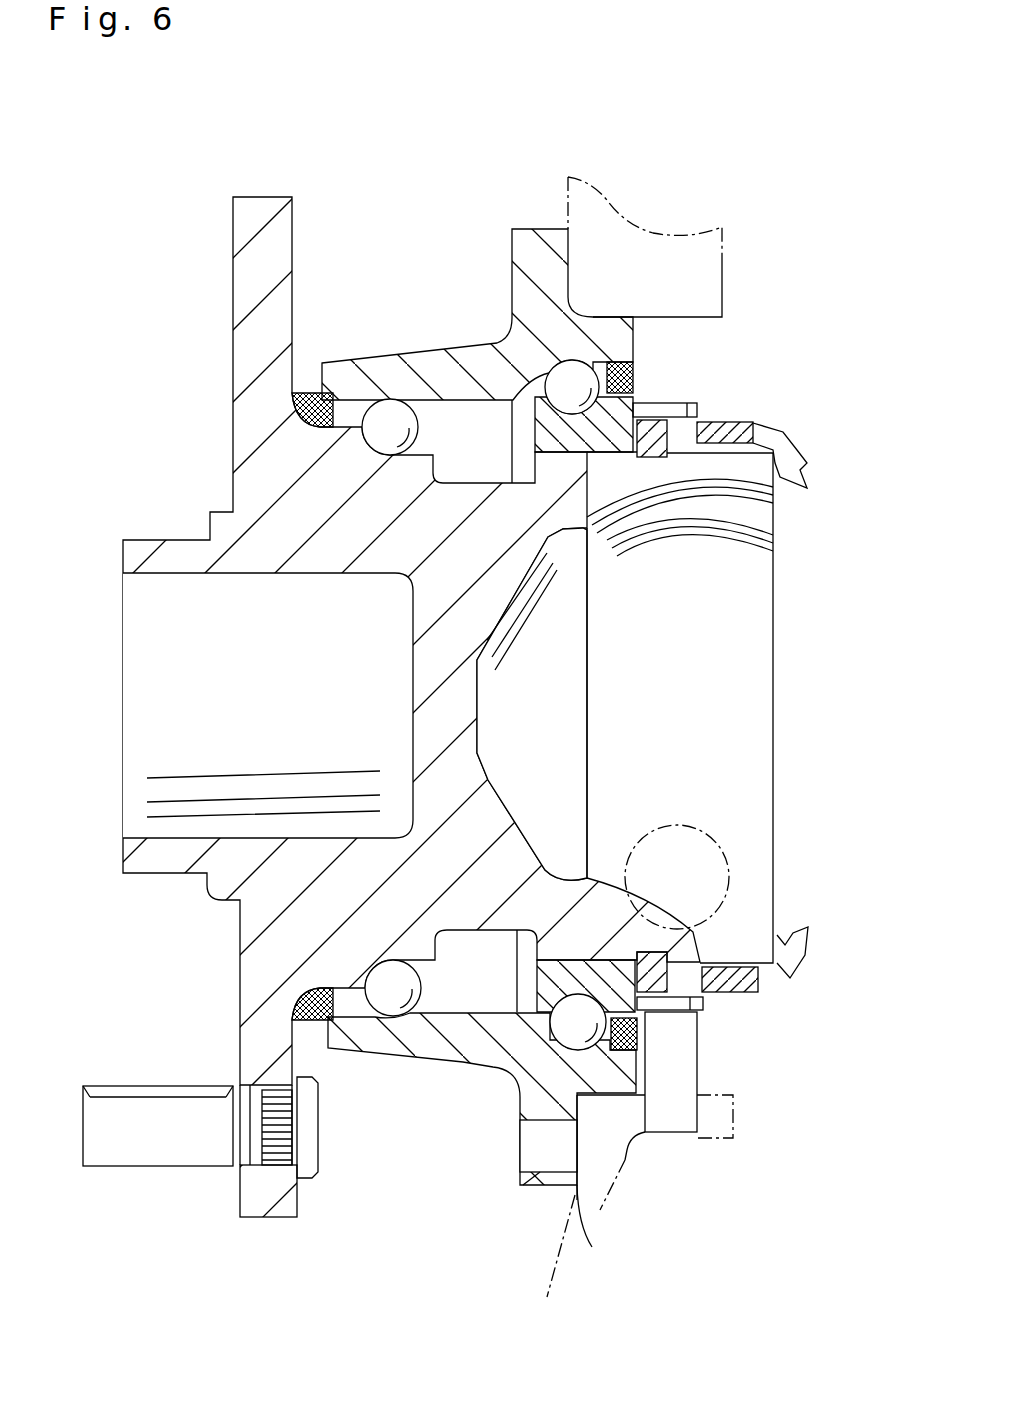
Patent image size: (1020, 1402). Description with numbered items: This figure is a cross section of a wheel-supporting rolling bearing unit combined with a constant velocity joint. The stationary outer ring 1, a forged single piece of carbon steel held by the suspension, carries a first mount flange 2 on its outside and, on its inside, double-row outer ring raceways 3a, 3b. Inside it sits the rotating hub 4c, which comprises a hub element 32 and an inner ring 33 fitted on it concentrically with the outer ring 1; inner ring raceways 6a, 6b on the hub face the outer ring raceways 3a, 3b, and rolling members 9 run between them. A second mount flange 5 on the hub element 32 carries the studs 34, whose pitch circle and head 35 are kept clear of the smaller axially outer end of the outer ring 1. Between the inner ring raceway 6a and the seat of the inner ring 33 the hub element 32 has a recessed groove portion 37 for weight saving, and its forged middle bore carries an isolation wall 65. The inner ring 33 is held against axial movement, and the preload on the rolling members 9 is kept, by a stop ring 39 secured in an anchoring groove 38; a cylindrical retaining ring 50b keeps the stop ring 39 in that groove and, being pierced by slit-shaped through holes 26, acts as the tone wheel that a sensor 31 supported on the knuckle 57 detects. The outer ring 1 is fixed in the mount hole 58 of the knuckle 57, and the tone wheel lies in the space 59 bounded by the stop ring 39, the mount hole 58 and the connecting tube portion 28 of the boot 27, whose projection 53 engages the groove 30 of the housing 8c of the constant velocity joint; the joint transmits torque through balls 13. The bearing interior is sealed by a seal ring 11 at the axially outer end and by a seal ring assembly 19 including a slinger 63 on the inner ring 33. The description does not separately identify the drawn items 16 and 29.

The outer ring 1 is at (507, 342).
The first mount flange 2 is at (542, 1182).
The outer ring raceway 3a is at (390, 1017).
The outer ring raceway 3b is at (590, 1097).
The hub 4c is at (283, 862).
The second mount flange 5 is at (243, 295).
The inner ring raceway 6a is at (297, 530).
The inner ring raceway 6b is at (573, 445).
The housing 8c is at (693, 937).
The rolling members 9 is at (550, 378).
The seal ring 11 is at (297, 397).
The balls 13 is at (665, 850).
The stem shaft 16 is at (750, 485).
The seal ring assembly 19 is at (615, 350).
The slit-shaped through holes 26 is at (673, 420).
The boot 27 is at (790, 953).
The connecting tube portion 28 is at (755, 967).
The nut 29 is at (730, 423).
The groove 30 is at (730, 463).
The sensor 31 is at (668, 1112).
The hub element 32 is at (238, 545).
The inner ring 33 is at (640, 390).
The studs 34 is at (152, 1140).
The head 35 is at (303, 1140).
The recessed groove portion 37 is at (373, 455).
The anchoring groove 38 is at (633, 483).
The stop ring 39 is at (653, 463).
The retaining ring 50b is at (673, 400).
The projection 53 is at (772, 927).
The knuckle 57 is at (573, 1245).
The mount hole 58 is at (627, 1125).
The space 59 is at (692, 332).
The slinger 63 is at (693, 1012).
The isolation wall 65 is at (440, 690).